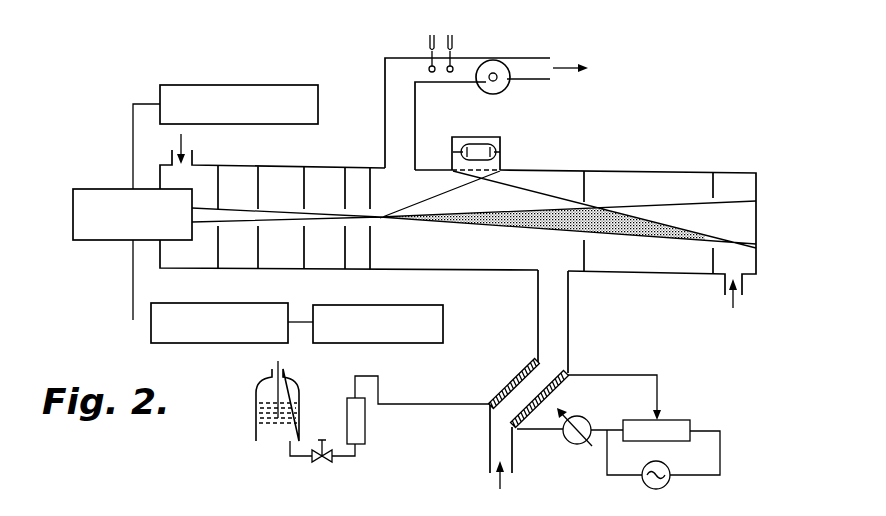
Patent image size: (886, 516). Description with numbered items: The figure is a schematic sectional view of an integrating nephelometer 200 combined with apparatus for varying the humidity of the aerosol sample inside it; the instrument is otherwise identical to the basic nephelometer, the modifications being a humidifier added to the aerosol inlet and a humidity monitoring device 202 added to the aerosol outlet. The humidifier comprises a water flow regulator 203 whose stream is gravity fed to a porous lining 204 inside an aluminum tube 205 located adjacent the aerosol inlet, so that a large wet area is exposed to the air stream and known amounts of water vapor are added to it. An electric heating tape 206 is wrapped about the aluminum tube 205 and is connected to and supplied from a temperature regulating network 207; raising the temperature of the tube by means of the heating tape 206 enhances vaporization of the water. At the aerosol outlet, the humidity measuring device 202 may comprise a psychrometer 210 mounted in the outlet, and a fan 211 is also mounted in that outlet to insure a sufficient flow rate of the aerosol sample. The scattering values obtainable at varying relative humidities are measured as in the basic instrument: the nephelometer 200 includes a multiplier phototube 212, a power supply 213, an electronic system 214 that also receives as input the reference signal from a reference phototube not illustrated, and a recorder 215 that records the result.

The integrating nephelometer 200 is at (730, 163).
The humidity monitoring device 202 is at (461, 23).
The water flow regulator 203 is at (346, 490).
The porous lining 204 is at (509, 398).
The aluminum tube 205 is at (535, 364).
The electric heating tape 206 is at (509, 378).
The temperature regulating network 207 is at (743, 302).
The psychrometer 210 is at (422, 47).
The fan 211 is at (498, 62).
The multiplier phototube 212 is at (98, 240).
The power supply 213 is at (283, 85).
The electronic system 214 is at (152, 341).
The recorder 215 is at (365, 344).